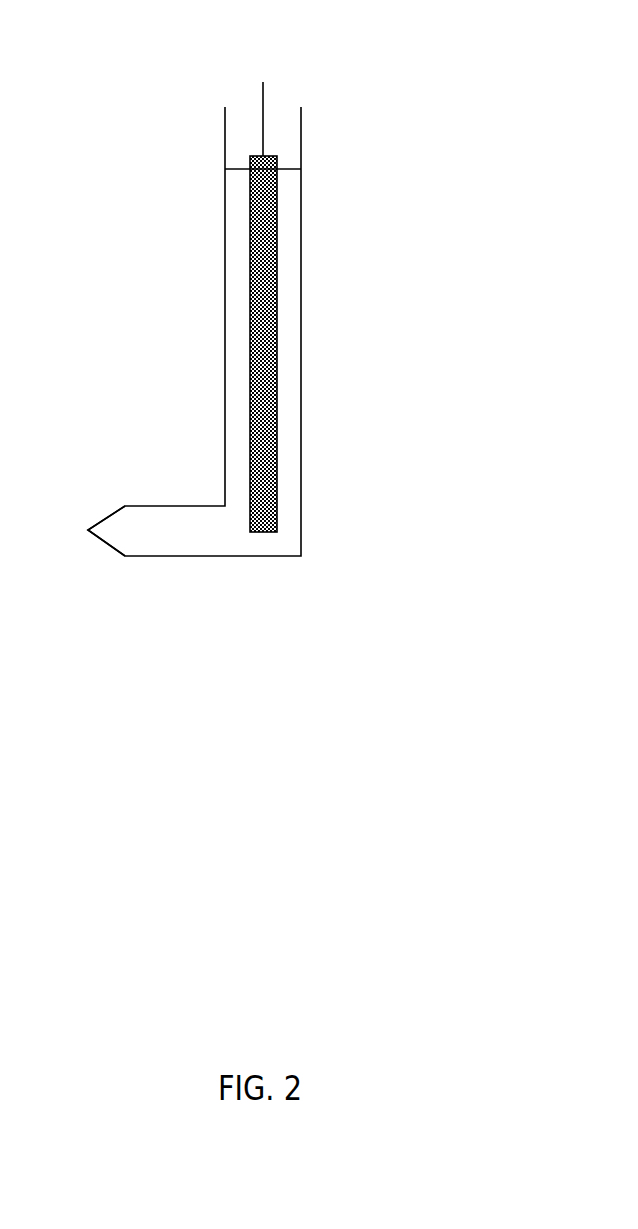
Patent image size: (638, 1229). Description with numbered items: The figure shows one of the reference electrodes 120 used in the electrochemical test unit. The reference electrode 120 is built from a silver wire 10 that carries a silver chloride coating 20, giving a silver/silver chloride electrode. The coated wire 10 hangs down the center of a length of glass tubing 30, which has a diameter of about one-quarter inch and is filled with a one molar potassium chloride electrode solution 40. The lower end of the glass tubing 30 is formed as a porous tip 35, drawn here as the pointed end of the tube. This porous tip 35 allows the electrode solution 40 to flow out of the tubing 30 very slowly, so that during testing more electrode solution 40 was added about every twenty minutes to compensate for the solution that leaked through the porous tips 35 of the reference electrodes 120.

The silver wire 10 is at (263, 107).
The silver chloride coating 20 is at (277, 294).
The glass tubing 30 is at (225, 280).
The porous tip 35 is at (88, 530).
The electrode solution 40 is at (237, 193).
The reference electrode 120 is at (303, 206).